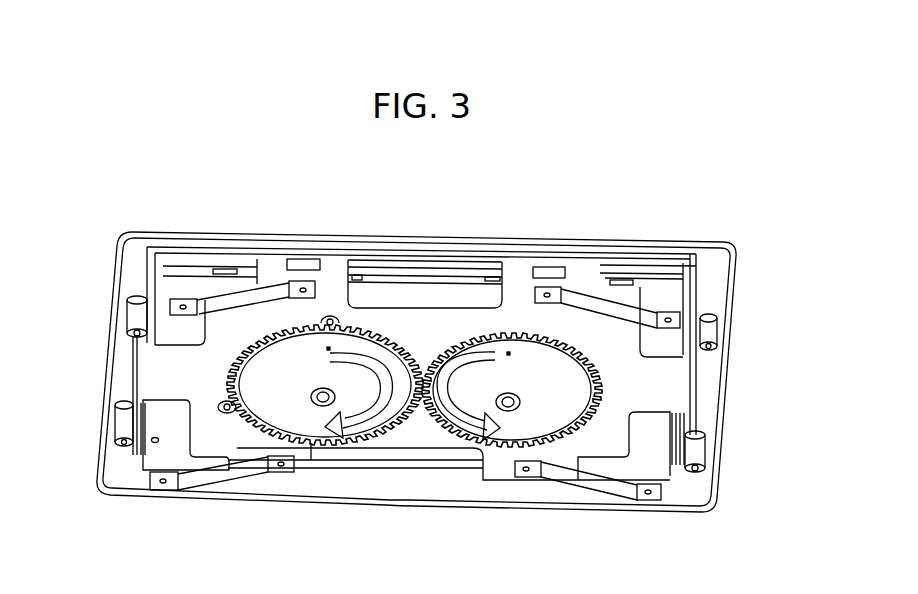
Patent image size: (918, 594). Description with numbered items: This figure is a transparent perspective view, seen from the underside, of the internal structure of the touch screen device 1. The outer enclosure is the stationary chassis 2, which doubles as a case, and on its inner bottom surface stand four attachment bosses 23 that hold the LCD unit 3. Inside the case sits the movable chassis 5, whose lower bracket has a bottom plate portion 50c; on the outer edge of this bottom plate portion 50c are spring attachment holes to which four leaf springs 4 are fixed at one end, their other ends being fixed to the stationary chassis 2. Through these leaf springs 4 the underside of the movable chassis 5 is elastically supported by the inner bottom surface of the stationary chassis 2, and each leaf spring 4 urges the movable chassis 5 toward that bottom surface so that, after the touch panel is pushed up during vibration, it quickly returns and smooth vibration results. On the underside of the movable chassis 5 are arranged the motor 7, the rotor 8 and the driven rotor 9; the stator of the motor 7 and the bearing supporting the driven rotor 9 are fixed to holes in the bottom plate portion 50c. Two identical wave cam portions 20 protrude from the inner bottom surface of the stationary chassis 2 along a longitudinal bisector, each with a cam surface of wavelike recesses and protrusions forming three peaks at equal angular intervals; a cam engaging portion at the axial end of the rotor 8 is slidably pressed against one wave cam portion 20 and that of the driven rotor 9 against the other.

The touch screen device 1 is at (127, 211).
The stationary chassis 2 is at (733, 244).
The LCD unit 3 is at (418, 280).
The leaf spring 4 is at (205, 298).
The movable chassis 5 is at (337, 262).
The motor 7 is at (290, 333).
The rotor 8 is at (265, 382).
The driven rotor 9 is at (525, 363).
The wave cam portion 20 is at (320, 408).
The attachment boss 23 is at (712, 323).
The bottom plate portion 50c is at (669, 383).